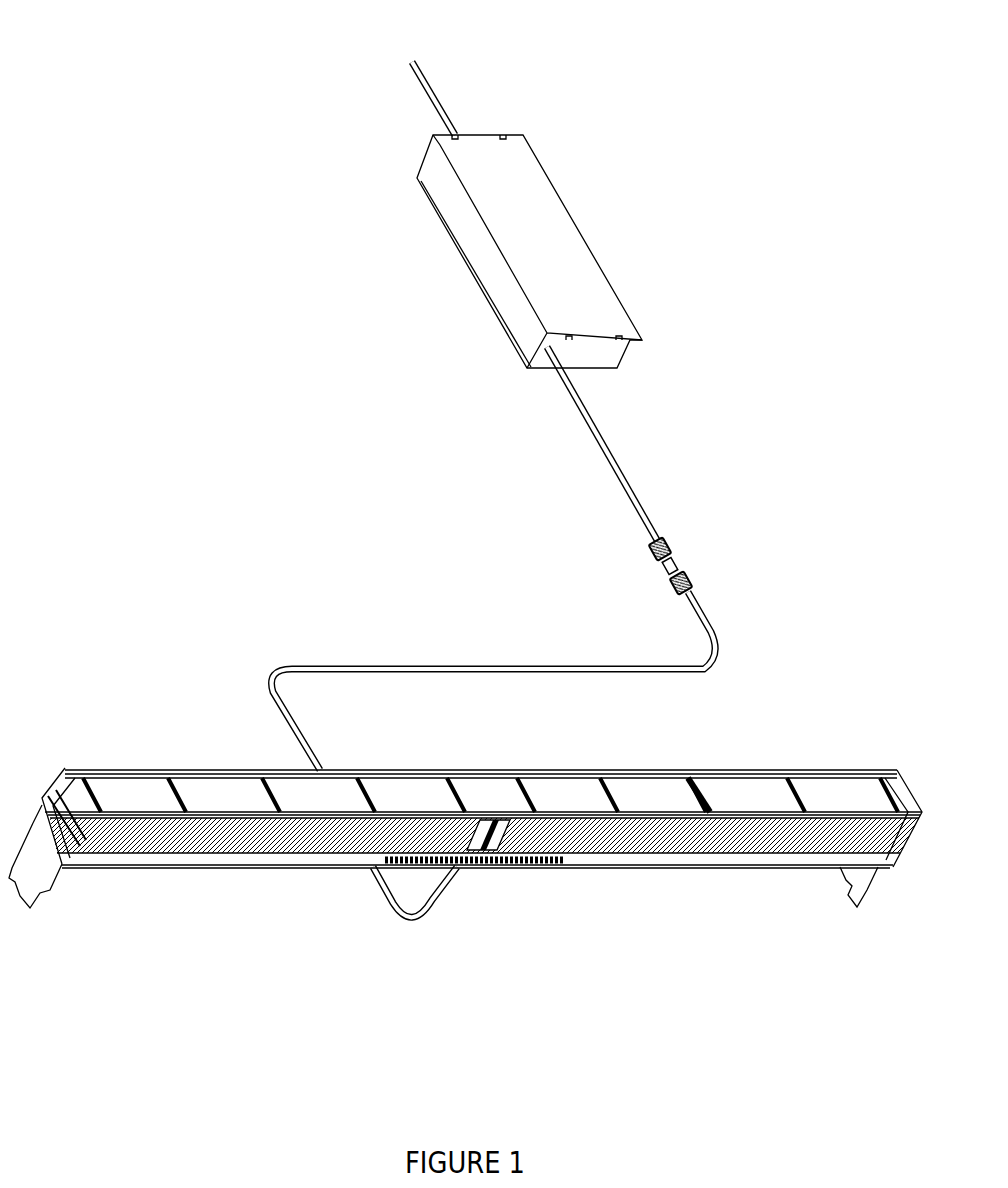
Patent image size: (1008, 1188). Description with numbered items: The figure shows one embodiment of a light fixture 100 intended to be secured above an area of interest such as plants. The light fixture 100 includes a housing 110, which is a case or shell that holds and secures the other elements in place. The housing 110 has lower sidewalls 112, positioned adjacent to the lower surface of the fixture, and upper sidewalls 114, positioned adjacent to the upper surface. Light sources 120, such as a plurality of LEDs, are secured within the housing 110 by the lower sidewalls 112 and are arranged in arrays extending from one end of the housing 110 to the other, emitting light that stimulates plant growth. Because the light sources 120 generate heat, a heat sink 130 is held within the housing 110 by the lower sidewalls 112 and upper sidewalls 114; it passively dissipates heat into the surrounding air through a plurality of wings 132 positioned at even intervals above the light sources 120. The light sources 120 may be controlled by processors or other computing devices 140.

The light fixture 100 is at (97, 88).
The housing 110 is at (60, 790).
The lower sidewalls 112 is at (581, 808).
The upper sidewalls 114 is at (612, 855).
The light sources 120 is at (217, 790).
The heat sink 130 is at (152, 842).
The wings 132 is at (250, 822).
The computing devices 140 is at (532, 280).